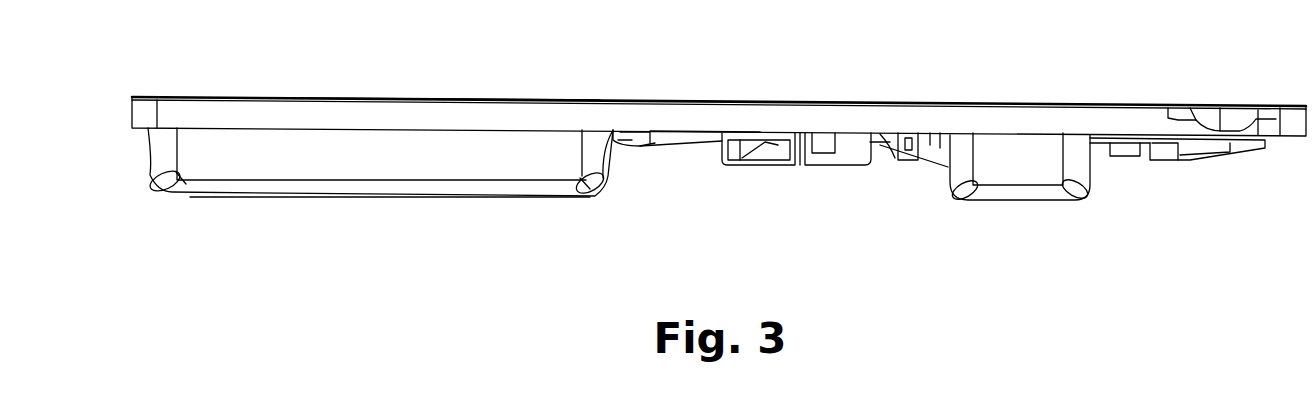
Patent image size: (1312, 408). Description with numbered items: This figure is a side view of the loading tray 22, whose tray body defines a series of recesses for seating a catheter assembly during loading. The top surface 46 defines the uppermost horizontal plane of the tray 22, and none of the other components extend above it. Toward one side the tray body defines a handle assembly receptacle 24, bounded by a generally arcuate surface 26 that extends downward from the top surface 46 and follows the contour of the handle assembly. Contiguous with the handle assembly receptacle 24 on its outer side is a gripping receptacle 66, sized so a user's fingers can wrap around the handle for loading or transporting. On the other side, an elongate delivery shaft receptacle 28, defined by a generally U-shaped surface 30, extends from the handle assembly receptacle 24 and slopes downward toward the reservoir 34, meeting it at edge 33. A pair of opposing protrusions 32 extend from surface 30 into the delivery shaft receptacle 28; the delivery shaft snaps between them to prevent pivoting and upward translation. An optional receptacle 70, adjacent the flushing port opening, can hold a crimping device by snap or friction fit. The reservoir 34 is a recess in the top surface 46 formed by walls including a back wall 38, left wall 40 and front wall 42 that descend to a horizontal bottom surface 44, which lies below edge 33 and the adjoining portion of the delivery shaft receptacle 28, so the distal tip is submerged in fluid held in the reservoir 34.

The tray 22 is at (709, 180).
The handle assembly receptacle 24 is at (928, 172).
The arcuate surface 26 is at (896, 160).
The elongate delivery shaft receptacle 28 is at (672, 126).
The surface 30 is at (698, 140).
The protrusions 32 is at (635, 130).
The edge 33 is at (625, 150).
The reservoir 34 is at (348, 154).
The back wall 38 is at (143, 180).
The left wall 40 is at (259, 155).
The front wall 42 is at (604, 180).
The bottom surface 44 is at (375, 200).
The top surface 46 is at (467, 96).
The gripping receptacle 66 is at (1018, 175).
The receptacle 70 is at (818, 168).